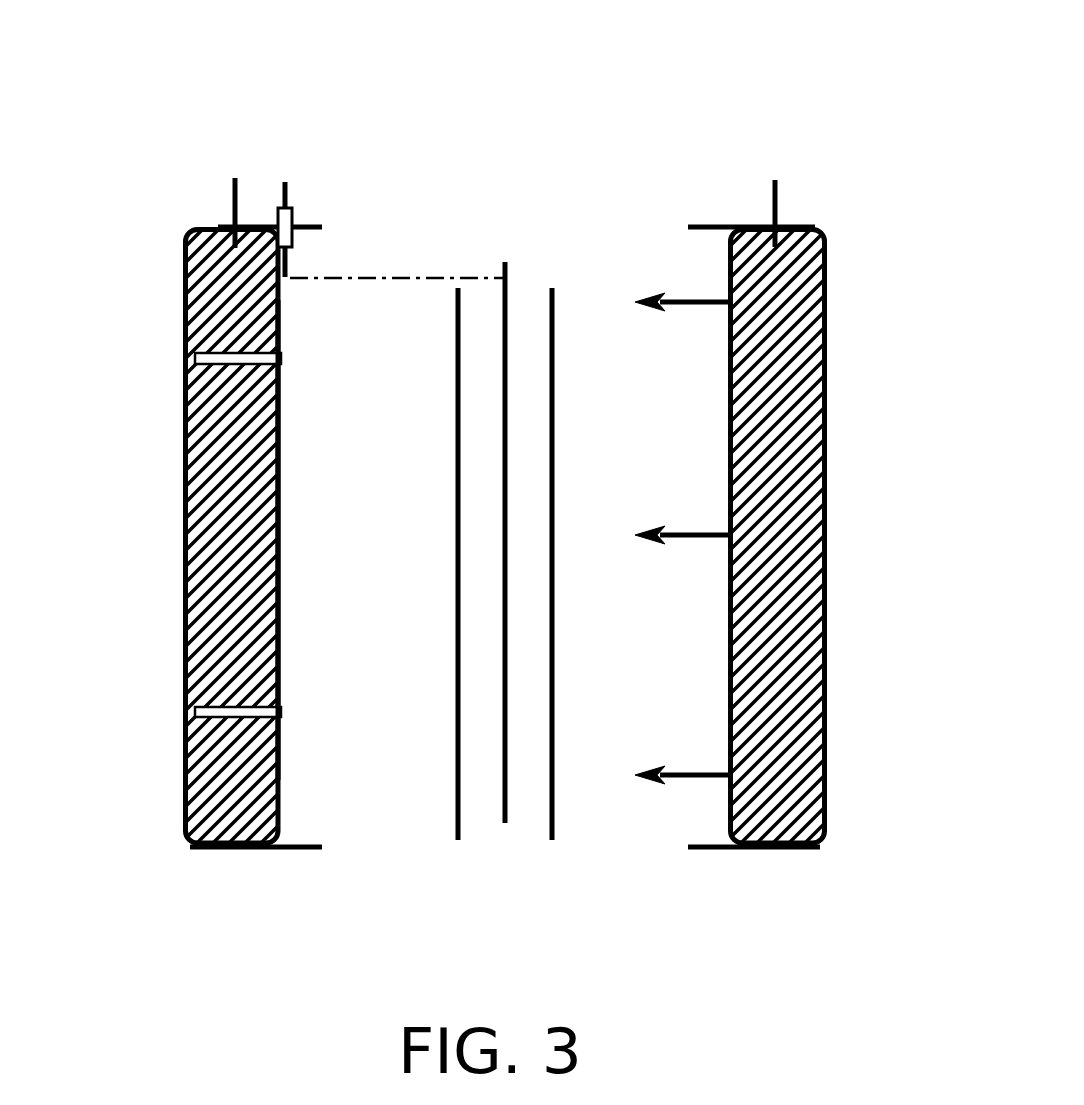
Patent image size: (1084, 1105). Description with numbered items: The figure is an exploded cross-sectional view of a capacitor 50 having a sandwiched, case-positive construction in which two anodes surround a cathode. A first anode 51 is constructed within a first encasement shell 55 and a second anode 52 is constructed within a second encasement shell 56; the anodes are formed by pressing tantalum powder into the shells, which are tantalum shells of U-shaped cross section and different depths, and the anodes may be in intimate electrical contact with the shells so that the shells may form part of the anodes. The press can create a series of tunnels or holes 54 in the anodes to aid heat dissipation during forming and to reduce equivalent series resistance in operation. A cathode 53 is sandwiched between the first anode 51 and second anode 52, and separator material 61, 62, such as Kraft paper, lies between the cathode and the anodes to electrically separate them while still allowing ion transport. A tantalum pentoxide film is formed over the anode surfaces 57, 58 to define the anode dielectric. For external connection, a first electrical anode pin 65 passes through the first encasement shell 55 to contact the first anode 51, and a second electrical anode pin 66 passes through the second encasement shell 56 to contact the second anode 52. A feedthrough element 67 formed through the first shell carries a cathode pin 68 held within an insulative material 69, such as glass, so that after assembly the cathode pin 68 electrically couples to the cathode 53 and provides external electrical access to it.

The capacitor 50 is at (768, 514).
The first anode 51 is at (238, 782).
The second anode 52 is at (785, 810).
The cathode 53 is at (505, 790).
The tunnels or holes 54 is at (281, 357).
The first encasement shell 55 is at (183, 560).
The second encasement shell 56 is at (827, 590).
The anode surface 57 is at (296, 498).
The anode surface 58 is at (716, 578).
The separator material 61 is at (458, 828).
The separator material 62 is at (552, 820).
The first electrical anode pin 65 is at (222, 216).
The second electrical anode pin 66 is at (775, 212).
The feedthrough element 67 is at (372, 182).
The cathode pin 68 is at (283, 198).
The insulative material 69 is at (292, 218).